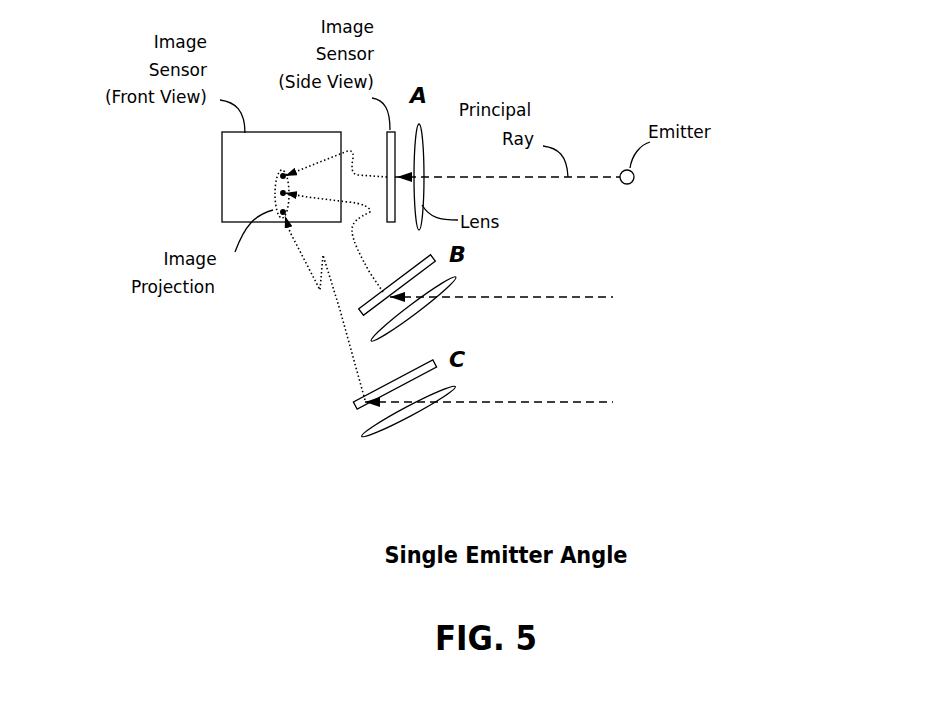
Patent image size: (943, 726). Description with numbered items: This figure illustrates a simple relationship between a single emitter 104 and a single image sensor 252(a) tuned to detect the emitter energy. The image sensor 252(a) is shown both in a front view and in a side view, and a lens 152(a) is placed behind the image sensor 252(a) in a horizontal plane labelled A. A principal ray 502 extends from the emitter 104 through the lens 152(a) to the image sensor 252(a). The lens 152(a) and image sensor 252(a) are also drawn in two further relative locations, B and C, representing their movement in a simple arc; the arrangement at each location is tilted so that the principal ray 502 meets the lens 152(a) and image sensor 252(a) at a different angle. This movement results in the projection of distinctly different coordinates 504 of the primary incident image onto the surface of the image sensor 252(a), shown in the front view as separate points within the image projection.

The image sensor 252 is at (222, 172).
The coordinates of primary incident image 504 is at (273, 195).
The lens 152 is at (423, 197).
The principal ray 502 is at (595, 177).
The emitter 104 is at (633, 180).